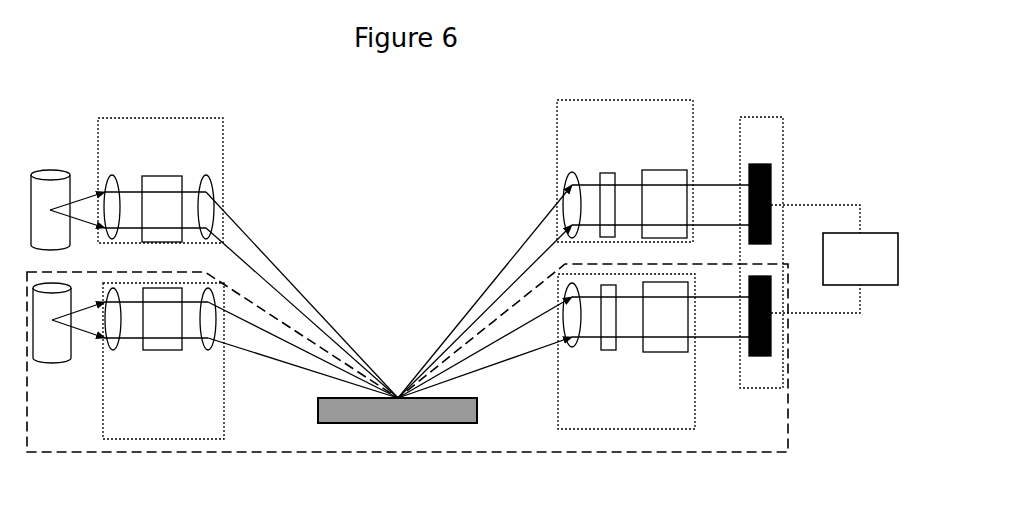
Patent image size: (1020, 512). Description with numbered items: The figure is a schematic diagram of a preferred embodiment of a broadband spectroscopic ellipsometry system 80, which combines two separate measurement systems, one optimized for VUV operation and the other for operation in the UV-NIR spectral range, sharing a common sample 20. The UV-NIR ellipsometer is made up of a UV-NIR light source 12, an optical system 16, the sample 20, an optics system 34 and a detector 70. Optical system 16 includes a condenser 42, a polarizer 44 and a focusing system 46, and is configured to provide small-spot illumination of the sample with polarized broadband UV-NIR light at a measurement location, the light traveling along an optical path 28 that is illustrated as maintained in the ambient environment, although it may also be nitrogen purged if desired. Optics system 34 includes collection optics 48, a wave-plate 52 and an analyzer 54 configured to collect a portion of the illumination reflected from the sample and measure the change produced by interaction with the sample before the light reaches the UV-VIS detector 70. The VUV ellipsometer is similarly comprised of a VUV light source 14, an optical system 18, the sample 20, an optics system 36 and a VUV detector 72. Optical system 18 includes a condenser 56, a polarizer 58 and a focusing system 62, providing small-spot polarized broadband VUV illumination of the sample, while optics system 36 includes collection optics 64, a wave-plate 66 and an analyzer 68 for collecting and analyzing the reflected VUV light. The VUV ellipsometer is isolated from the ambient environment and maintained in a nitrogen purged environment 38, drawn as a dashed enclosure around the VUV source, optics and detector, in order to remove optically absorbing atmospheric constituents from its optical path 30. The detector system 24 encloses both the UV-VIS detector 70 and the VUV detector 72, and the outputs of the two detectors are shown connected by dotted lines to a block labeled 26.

The broadband spectroscopic ellipsometry system 80 is at (390, 86).
The UV-NIR light source 12 is at (68, 198).
The VUV light source 14 is at (68, 335).
The optical system 16 is at (172, 143).
The optical system 18 is at (172, 433).
The condenser 42 is at (112, 195).
The polarizer 44 is at (162, 197).
The focusing system 46 is at (207, 195).
The condenser 56 is at (115, 334).
The polarizer 58 is at (162, 334).
The focusing system 62 is at (207, 334).
The optical path 28 is at (389, 291).
The optical path 30 is at (390, 347).
The sample 20 is at (397, 425).
The N2 purged environment 38 is at (716, 443).
The optics system 34 is at (634, 131).
The optics system 36 is at (645, 427).
The collection optics 48 is at (570, 193).
The wave-plate 52 is at (606, 192).
The analyzer 54 is at (664, 191).
The collection optics 64 is at (573, 330).
The wave-plate 66 is at (608, 331).
The analyzer 68 is at (665, 329).
The detector system 24 is at (761, 238).
The UV-VIS detector 70 is at (758, 193).
The VUV detector 72 is at (758, 328).
The processor 26 is at (848, 271).